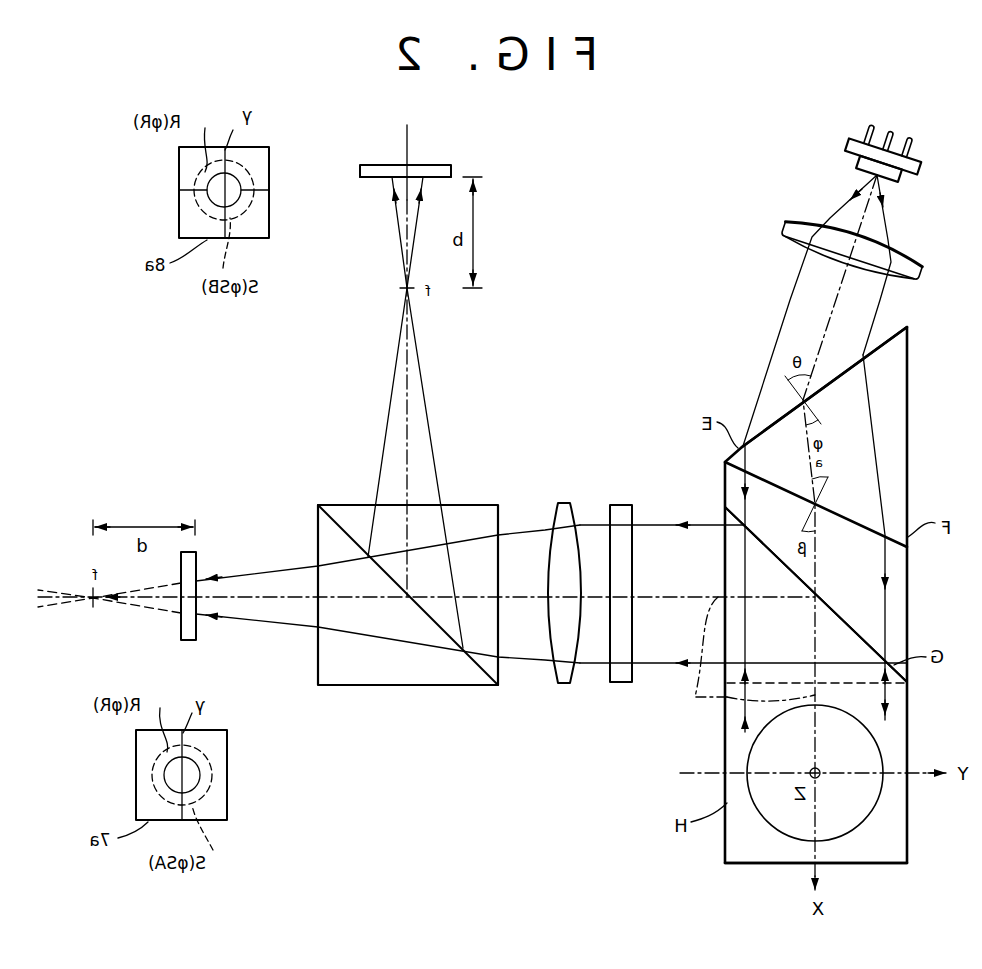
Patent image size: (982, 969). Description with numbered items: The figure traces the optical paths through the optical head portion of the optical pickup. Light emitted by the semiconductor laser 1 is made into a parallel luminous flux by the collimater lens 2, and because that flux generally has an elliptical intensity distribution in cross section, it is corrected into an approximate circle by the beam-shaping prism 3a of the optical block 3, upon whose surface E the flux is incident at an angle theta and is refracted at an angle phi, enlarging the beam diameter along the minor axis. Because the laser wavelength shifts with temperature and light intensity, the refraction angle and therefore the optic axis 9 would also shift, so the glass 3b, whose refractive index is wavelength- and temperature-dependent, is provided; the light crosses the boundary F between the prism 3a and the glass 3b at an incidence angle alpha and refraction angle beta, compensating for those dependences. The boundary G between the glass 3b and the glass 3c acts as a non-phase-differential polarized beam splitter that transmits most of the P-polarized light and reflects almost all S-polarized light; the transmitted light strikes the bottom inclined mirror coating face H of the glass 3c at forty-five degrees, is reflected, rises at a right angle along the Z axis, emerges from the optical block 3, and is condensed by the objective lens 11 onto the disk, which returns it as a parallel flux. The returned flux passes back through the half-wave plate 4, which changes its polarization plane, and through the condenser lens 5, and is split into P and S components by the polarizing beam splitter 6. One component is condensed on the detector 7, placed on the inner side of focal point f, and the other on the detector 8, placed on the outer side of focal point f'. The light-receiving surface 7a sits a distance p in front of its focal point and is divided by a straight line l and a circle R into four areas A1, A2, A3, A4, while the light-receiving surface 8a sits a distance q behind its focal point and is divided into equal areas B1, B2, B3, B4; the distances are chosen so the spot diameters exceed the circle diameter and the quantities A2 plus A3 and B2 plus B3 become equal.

The semiconductor laser 1 is at (848, 145).
The collimater lens 2 is at (783, 233).
The optical block 3 is at (727, 848).
The beam-shaping prism 3a is at (909, 450).
The glass 3b is at (909, 614).
The glass 3c is at (909, 718).
The half-wave plate 4 is at (622, 684).
The condenser lens 5 is at (562, 684).
The polarizing beam splitter 6 is at (748, 657).
The signal detector 7 is at (187, 642).
The light-receiving surface 7a is at (197, 628).
The signal detector 8 is at (360, 166).
The light-receiving surface 8a is at (375, 178).
The optic axis 9 is at (398, 687).
The objective lens 11 is at (782, 832).
The area A1 is at (212, 797).
The area A2 is at (190, 768).
The area A3 is at (167, 778).
The area A4 is at (150, 802).
The area B1 is at (263, 223).
The area B2 is at (240, 187).
The area B3 is at (207, 188).
The area B4 is at (190, 227).